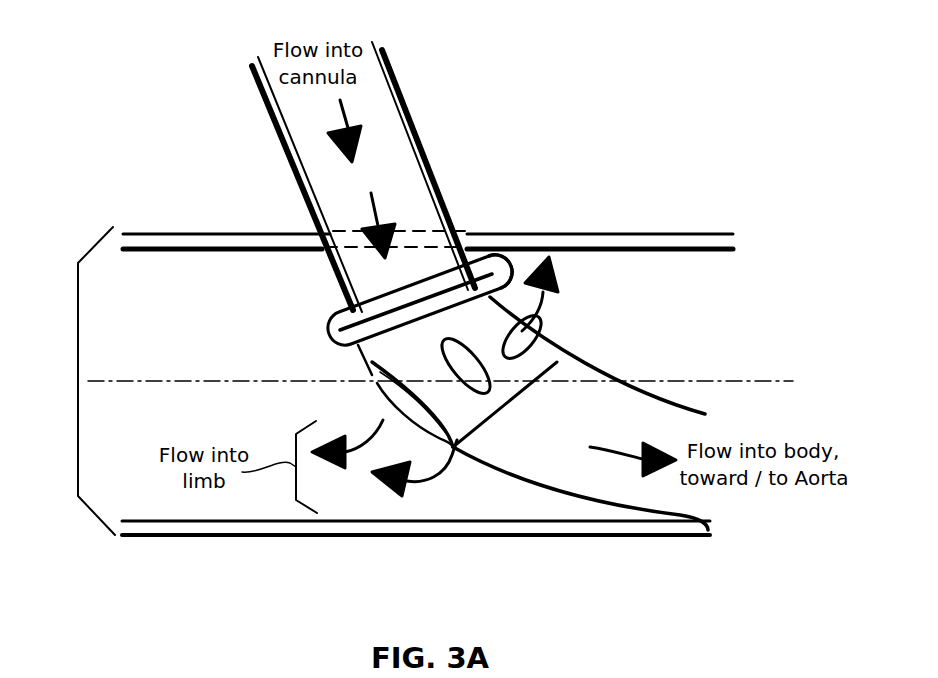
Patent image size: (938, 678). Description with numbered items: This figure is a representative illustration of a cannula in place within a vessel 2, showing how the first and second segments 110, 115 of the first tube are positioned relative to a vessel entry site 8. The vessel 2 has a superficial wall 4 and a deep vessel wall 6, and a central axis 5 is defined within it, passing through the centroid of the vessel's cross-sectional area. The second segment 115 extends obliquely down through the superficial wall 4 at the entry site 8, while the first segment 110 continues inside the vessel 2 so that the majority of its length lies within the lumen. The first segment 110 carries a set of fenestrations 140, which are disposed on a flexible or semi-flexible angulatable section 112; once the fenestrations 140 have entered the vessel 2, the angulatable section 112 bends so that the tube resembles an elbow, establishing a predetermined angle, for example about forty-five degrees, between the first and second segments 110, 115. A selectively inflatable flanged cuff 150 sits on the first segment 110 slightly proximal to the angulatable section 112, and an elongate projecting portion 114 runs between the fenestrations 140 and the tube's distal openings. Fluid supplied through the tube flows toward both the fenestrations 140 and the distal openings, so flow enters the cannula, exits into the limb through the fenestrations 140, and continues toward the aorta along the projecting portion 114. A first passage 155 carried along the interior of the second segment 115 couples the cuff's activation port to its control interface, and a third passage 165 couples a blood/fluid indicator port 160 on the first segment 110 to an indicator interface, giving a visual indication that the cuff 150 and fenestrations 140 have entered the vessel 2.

The vessel 2 is at (78, 383).
The superficial wall 4 is at (651, 234).
The central axis 5 is at (763, 381).
The deep vessel wall 6 is at (193, 536).
The vessel entry site 8 is at (440, 231).
The first segment 110 is at (516, 351).
The angulatable section 112 is at (372, 367).
The elongate projecting portion 114 is at (590, 366).
The second segment 115 is at (363, 164).
The fenestrations 140 is at (513, 343).
The flanged cuff 150 is at (403, 259).
The first passage 155 is at (256, 57).
The blood/fluid indicator port 160 is at (505, 262).
The third passage 165 is at (375, 42).